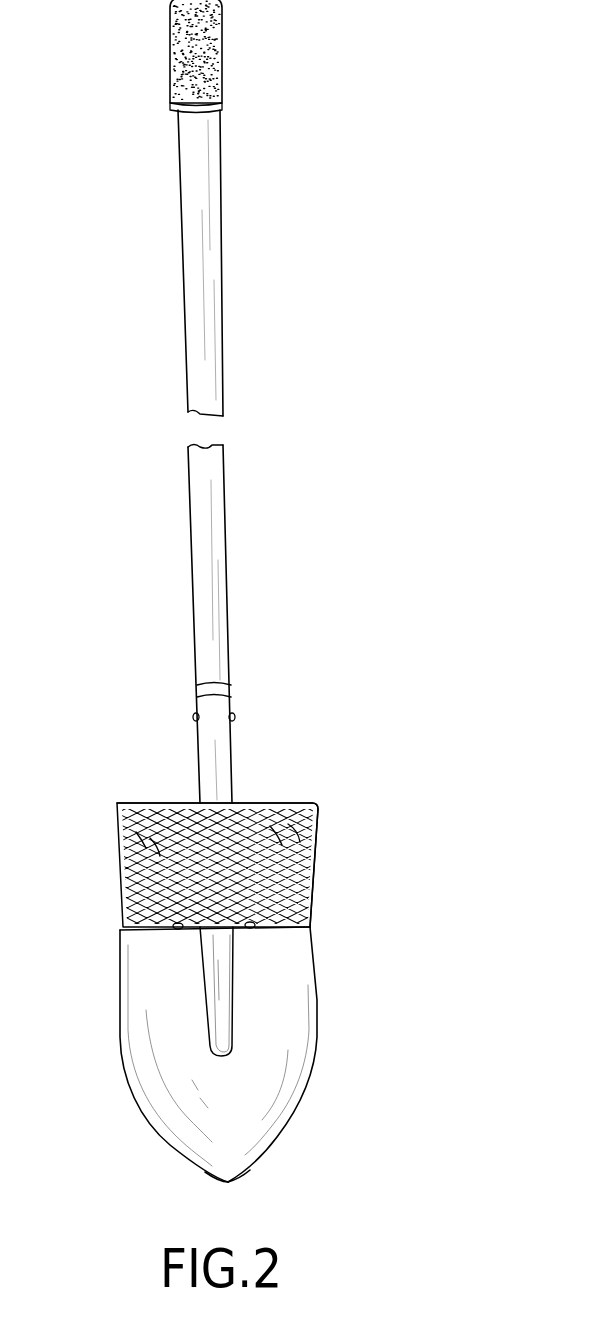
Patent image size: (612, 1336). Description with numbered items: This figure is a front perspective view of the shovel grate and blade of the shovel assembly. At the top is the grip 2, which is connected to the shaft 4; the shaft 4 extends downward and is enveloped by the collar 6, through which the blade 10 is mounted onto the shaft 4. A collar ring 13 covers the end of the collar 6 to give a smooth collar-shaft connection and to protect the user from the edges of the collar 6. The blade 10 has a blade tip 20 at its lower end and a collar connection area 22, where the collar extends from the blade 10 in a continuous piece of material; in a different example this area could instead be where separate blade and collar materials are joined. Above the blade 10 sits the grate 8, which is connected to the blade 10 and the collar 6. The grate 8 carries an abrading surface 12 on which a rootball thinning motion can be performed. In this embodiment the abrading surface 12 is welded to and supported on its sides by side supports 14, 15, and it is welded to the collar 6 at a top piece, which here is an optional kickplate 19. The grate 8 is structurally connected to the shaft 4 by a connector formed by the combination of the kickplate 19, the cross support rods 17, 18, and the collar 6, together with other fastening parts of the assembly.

The grip 2 is at (212, 54).
The shaft 4 is at (210, 378).
The collar 6 is at (221, 731).
The grate 8 is at (247, 863).
The blade 10 is at (317, 1038).
The abrading surface 12 is at (298, 887).
The collar ring 13 is at (197, 693).
The side support 14 is at (120, 896).
The side support 15 is at (317, 843).
The cross support rod 17 is at (152, 852).
The cross support rod 18 is at (283, 847).
The kickplate 19 is at (157, 803).
The blade tip 20 is at (228, 1182).
The collar connection area 22 is at (208, 988).